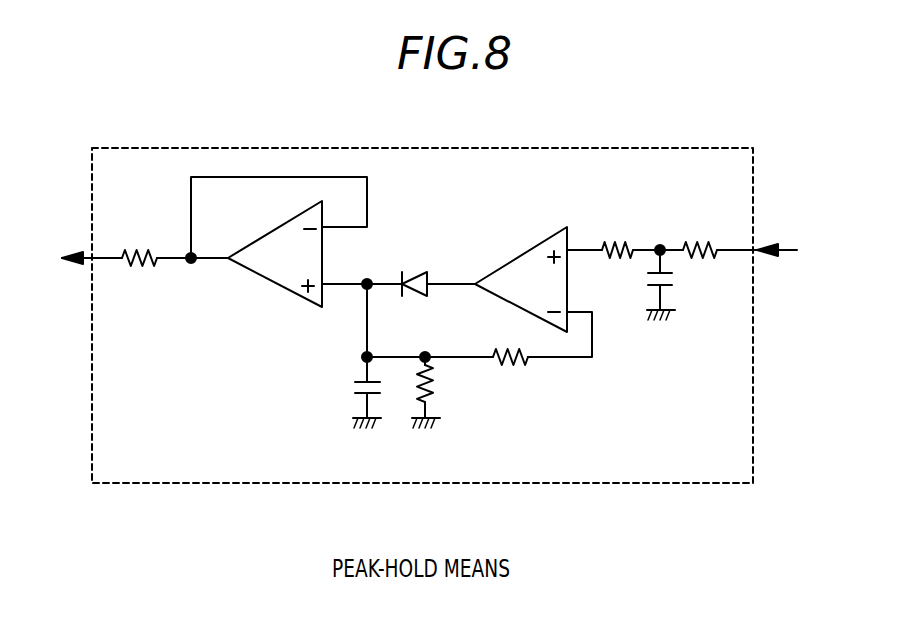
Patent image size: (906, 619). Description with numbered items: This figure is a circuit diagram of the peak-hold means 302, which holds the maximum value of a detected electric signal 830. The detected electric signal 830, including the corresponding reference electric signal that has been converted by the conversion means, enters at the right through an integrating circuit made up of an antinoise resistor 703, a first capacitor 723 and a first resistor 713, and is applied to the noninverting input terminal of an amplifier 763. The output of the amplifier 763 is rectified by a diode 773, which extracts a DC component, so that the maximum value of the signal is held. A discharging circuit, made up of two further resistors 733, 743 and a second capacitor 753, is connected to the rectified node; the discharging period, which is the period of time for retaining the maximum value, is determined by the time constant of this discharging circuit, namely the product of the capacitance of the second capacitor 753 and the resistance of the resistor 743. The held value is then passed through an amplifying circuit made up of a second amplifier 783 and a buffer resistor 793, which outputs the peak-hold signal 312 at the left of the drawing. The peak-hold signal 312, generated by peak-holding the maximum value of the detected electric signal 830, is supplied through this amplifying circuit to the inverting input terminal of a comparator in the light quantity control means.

The peak-hold means 302 is at (318, 148).
The peak-hold signal 312 is at (80, 245).
The buffer resistor R100 793 is at (140, 268).
The amplifier 783 is at (283, 258).
The diode 773 is at (427, 270).
The amplifier 763 is at (530, 260).
The resistor 713 is at (617, 245).
The antinoise resistor 703 is at (710, 240).
The detected electric signal 830 is at (782, 246).
The capacitor C60 723 is at (654, 288).
The resistor 733 is at (512, 368).
The resistor R90 743 is at (418, 400).
The capacitor C70 753 is at (358, 395).